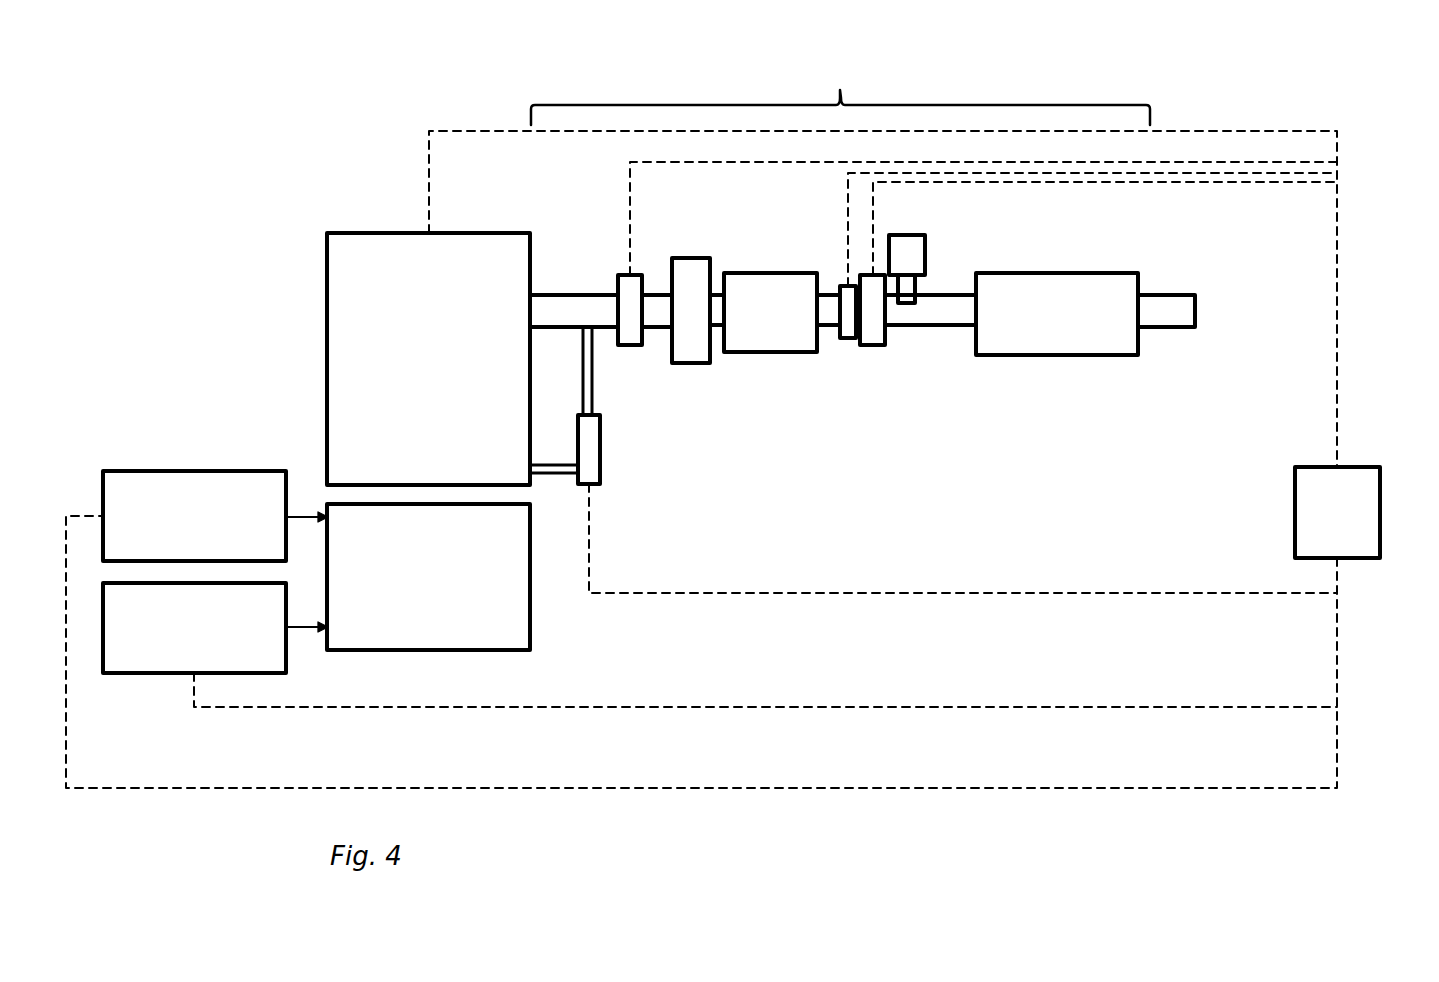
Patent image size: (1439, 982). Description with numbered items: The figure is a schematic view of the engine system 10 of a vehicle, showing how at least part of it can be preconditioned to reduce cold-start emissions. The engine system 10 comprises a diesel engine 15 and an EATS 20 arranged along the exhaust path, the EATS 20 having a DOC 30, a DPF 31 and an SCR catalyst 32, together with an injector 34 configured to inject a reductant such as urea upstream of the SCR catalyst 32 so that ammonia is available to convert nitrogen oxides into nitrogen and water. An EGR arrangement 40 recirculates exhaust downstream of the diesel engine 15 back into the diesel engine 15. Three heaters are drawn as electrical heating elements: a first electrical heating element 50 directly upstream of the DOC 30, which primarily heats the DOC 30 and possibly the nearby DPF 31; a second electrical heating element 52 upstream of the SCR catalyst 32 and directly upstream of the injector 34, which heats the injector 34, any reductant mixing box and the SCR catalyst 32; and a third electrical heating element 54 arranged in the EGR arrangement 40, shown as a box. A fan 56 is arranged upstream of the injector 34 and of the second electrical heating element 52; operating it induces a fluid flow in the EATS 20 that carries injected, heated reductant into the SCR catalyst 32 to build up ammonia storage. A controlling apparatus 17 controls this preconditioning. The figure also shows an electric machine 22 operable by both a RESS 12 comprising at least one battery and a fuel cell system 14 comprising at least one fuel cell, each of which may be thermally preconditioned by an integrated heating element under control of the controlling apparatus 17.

The engine system 10 is at (1364, 182).
The rechargeable energy storage system (RESS) 12 is at (168, 470).
The fuel cell system 14 is at (157, 675).
The diesel engine 15 is at (358, 232).
The controlling apparatus 17 is at (1361, 560).
The EATS 20 is at (701, 418).
The electric machine 22 is at (531, 553).
The DOC 30 is at (688, 366).
The DPF 31 is at (770, 351).
The SCR catalyst 32 is at (1039, 356).
The injector 34 is at (925, 272).
The EGR arrangement 40 is at (592, 358).
The first electrical heating element 50 is at (624, 273).
The second electrical heating element 52 is at (879, 350).
The third electrical heating element 54 is at (602, 465).
The fan 56 is at (846, 340).